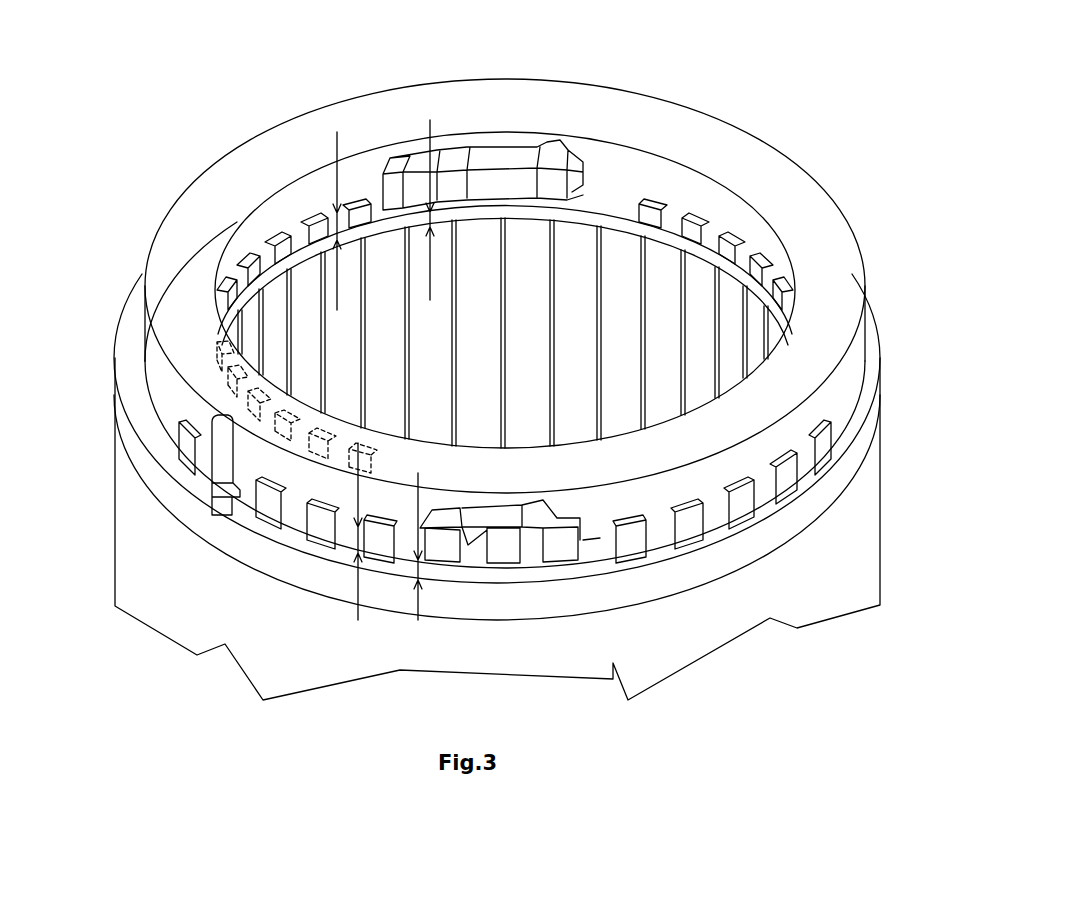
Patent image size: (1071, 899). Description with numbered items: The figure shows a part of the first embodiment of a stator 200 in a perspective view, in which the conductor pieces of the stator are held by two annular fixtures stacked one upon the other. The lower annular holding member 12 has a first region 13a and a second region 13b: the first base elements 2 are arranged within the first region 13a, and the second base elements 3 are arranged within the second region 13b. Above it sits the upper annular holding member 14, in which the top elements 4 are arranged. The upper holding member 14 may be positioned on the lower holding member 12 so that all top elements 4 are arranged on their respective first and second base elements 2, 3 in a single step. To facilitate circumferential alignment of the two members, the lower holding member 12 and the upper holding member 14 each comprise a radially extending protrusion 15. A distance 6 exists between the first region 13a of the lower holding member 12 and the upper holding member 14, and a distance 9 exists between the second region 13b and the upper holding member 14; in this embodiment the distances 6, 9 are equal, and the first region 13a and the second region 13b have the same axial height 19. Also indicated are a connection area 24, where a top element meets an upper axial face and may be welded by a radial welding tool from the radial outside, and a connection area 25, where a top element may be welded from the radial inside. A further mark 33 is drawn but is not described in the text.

The stator 200 is at (175, 102).
The first base elements 2 is at (737, 512).
The second base elements 3 is at (722, 245).
The top elements 4 is at (258, 386).
The distance 6 is at (352, 562).
The distance 9 is at (338, 226).
The lower annular holding member 12 is at (662, 555).
The first region 13a is at (242, 518).
The second region 13b is at (610, 217).
The upper annular holding member 14 is at (592, 112).
The radially extending protrusion 15 is at (223, 505).
The axial height 19 is at (428, 215).
The connection area 24 is at (507, 538).
The connection area 25 is at (505, 160).
The friction surface rim 33 is at (577, 213).